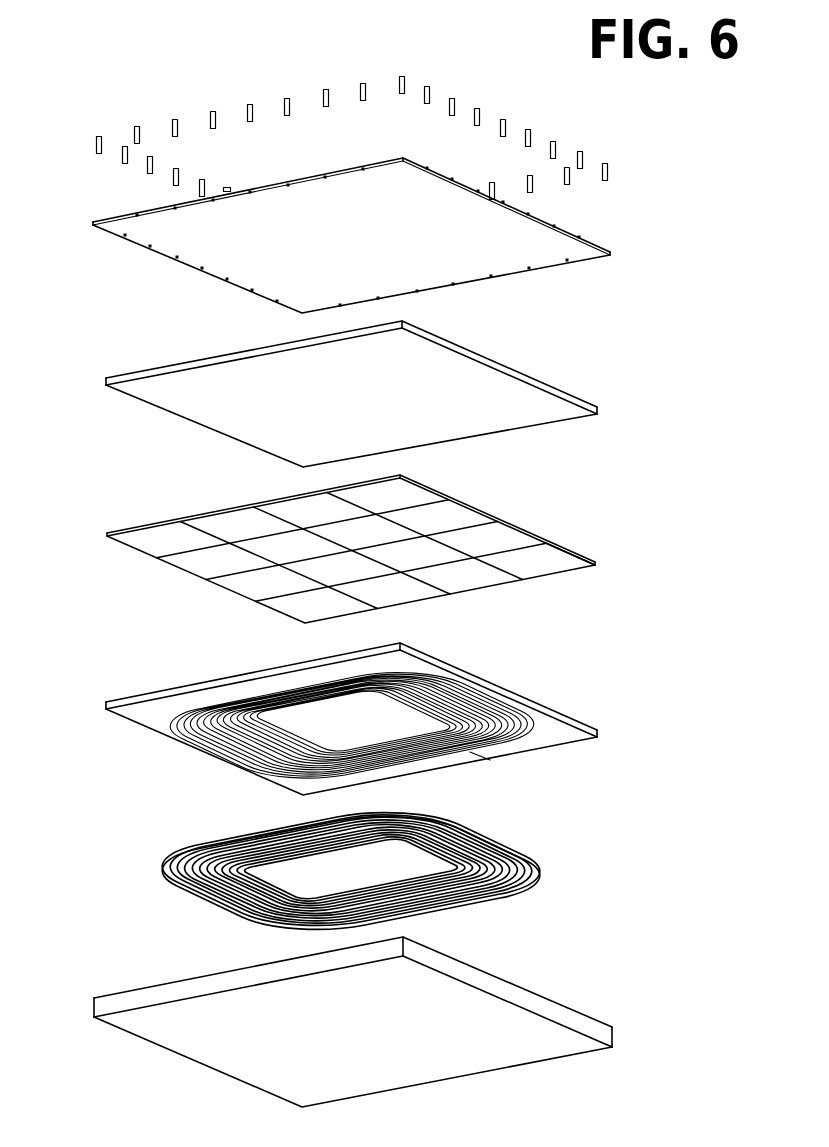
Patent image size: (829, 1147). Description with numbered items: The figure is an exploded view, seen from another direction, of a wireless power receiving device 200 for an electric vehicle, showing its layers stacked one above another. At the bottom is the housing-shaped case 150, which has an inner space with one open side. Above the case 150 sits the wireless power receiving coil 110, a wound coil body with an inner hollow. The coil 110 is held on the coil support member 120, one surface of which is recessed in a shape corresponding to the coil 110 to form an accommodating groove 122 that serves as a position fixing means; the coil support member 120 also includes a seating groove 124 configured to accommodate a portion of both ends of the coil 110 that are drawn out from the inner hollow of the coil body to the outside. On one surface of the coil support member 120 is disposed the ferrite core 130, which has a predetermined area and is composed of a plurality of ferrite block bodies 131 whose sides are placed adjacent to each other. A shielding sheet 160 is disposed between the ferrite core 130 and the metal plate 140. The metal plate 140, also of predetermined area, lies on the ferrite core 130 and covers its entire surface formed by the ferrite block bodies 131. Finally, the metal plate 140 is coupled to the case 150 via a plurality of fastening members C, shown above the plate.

The wireless power receiving device 200 is at (362, 40).
The fastening member C is at (609, 171).
The metal plate 140 is at (609, 251).
The shielding sheet 160 is at (560, 387).
The ferrite core 130 is at (442, 546).
The ferrite block body 131 is at (573, 546).
The coil support member 120 is at (397, 694).
The seating groove 124 is at (250, 671).
The accommodating groove 122 is at (477, 755).
The wireless power receiving coil 110 is at (533, 860).
The case 150 is at (557, 1008).